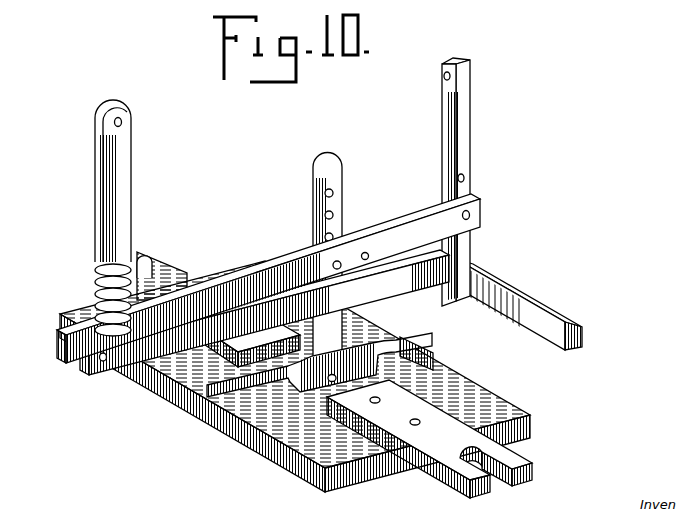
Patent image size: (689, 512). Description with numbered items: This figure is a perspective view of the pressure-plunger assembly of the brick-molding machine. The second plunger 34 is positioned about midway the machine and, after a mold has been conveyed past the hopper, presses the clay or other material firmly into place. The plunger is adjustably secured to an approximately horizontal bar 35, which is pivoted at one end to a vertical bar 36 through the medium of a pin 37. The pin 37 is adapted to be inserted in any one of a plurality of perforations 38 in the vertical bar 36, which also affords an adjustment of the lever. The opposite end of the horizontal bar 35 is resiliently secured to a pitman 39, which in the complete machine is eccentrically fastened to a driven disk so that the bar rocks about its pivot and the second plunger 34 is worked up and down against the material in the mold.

The second plunger 34 is at (292, 435).
The horizontal bar 35 is at (273, 259).
The vertical bar 36 is at (463, 155).
The pin 37 is at (472, 212).
The perforations 38 is at (466, 178).
The pitman 39 is at (101, 210).